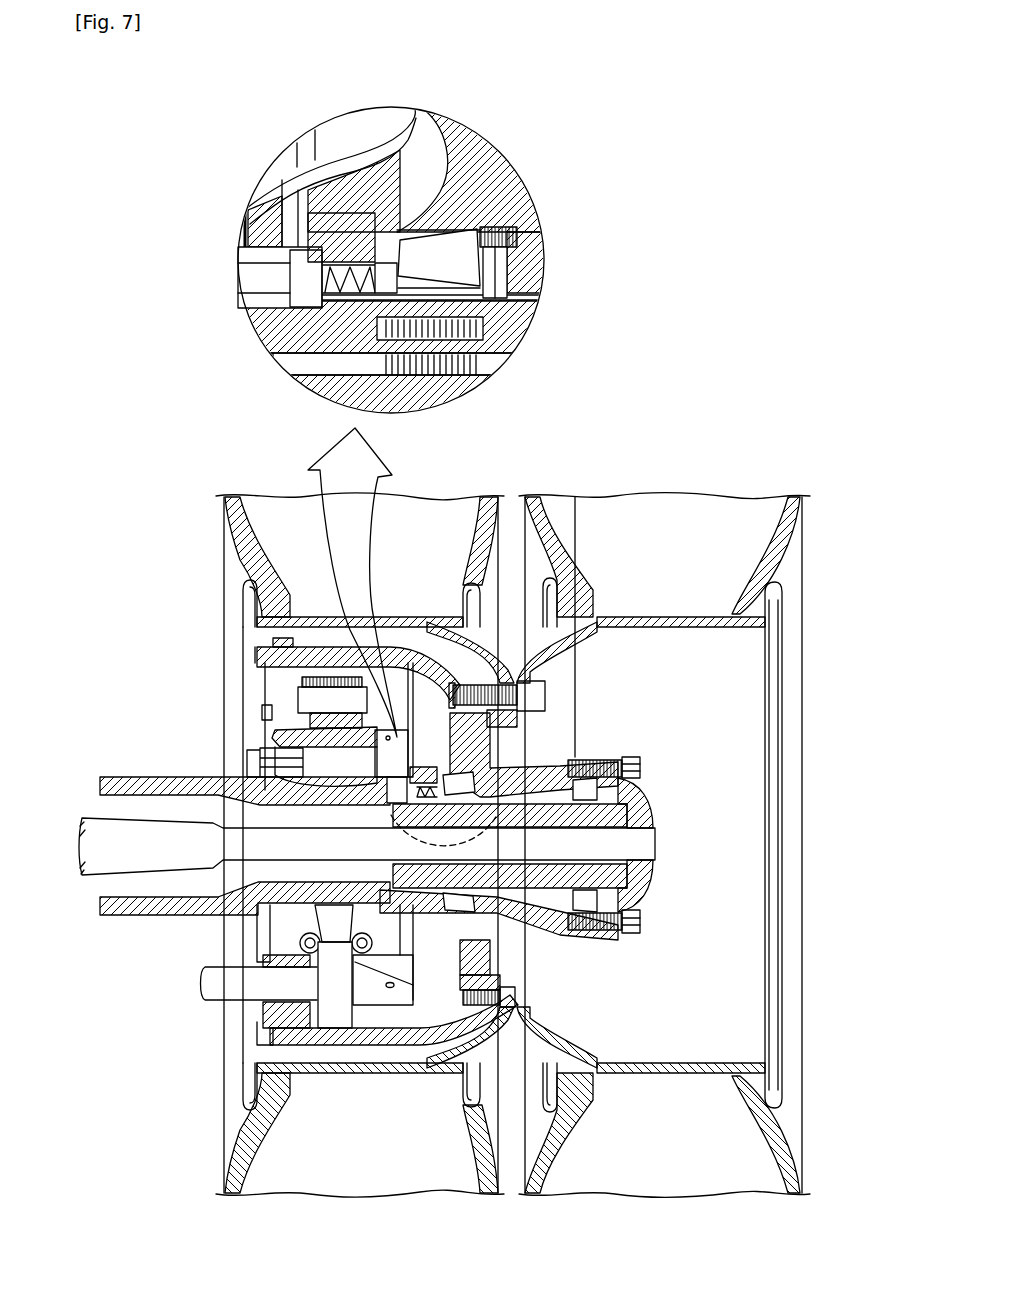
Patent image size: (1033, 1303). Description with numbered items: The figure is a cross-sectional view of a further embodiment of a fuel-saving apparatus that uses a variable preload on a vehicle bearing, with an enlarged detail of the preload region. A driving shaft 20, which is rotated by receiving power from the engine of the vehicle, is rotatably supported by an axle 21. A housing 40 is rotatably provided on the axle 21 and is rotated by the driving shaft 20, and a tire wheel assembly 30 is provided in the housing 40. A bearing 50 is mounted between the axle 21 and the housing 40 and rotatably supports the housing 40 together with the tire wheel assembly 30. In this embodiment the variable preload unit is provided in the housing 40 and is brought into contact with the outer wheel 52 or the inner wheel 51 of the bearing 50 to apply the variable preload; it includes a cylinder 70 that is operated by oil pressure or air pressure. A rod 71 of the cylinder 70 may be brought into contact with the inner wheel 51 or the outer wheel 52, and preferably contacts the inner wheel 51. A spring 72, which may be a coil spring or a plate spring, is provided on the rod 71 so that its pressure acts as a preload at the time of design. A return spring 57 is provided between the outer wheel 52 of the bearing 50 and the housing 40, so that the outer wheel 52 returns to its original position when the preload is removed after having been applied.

The driving shaft 20 is at (128, 867).
The axle 21 is at (183, 913).
The tire wheel assembly 30 is at (208, 1098).
The housing 40 is at (510, 927).
The bearing 50 is at (485, 685).
The inner wheel 51 is at (417, 286).
The outer wheel 52 is at (447, 233).
The return spring 57 is at (518, 235).
The cylinder 70 is at (298, 223).
The rod 71 is at (365, 250).
The spring 72 is at (343, 290).